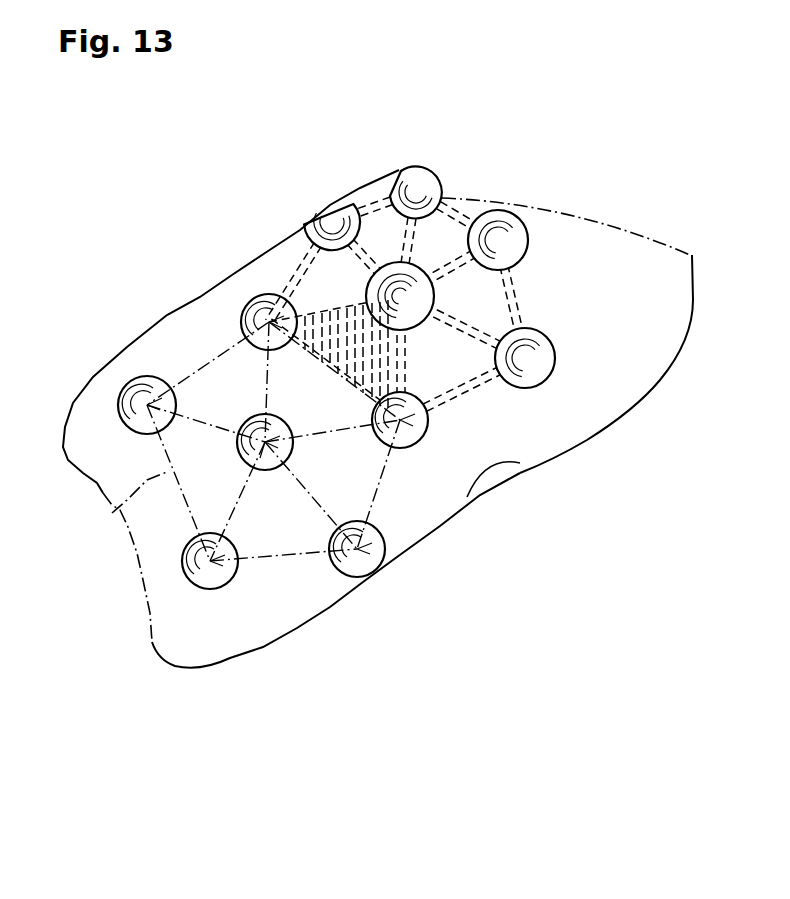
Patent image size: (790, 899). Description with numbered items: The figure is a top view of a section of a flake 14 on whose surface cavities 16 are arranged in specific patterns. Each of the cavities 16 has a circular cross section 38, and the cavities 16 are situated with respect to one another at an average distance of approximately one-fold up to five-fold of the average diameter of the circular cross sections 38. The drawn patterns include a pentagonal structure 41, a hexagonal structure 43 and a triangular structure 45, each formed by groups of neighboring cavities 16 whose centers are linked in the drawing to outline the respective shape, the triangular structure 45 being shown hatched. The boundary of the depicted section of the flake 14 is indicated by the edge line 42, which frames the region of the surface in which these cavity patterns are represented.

The flake 14 is at (585, 76).
The cavities 16 is at (148, 383).
The circular cross sections 38 is at (252, 298).
The pentagonal structure 41 is at (245, 634).
The boundary edge 42 is at (462, 200).
The hexagonal structure 43 is at (539, 442).
The triangular structure 45 is at (337, 343).